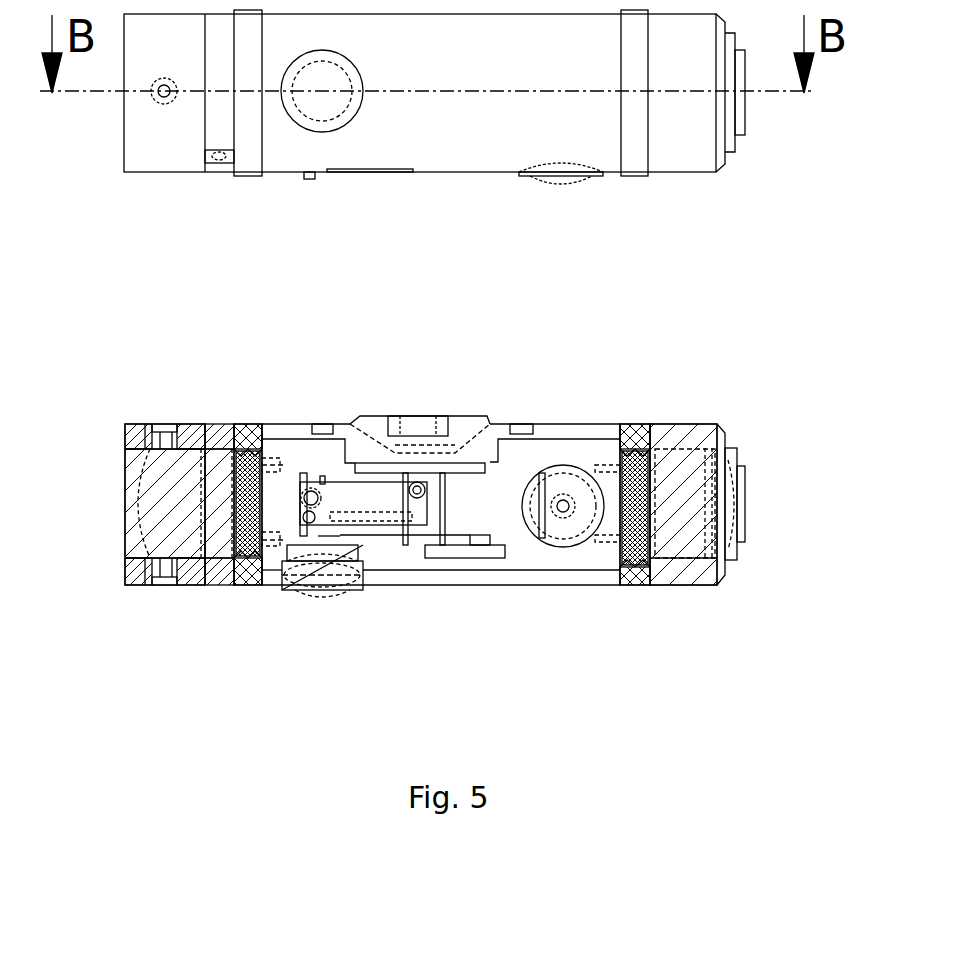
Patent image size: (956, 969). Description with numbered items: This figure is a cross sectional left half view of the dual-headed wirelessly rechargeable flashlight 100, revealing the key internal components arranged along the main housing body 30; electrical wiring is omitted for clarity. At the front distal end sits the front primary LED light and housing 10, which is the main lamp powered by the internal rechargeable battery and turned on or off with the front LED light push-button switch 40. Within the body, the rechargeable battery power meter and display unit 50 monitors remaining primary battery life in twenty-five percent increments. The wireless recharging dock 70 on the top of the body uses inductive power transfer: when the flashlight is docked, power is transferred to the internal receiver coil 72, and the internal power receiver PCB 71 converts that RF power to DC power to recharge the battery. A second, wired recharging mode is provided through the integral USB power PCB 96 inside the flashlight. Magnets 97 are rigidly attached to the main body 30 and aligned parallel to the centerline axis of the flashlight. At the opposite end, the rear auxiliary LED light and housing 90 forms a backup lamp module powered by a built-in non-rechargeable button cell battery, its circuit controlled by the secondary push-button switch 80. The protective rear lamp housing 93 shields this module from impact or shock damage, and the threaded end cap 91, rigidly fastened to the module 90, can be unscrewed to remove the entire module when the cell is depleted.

The dual-headed wirelessly rechargeable flashlight 100 is at (718, 392).
The front primary LED light and housing 10 is at (165, 503).
The main housing body 30 is at (375, 576).
The front LED light push-button switch 40 is at (322, 598).
The rechargeable battery power meter and display unit 50 is at (356, 501).
The wireless recharging dock 70 is at (418, 430).
The internal power receiver PCB 71 is at (505, 545).
The internal receiver coil 72 is at (372, 468).
The secondary (rear LED light) push-button switch 80 is at (563, 506).
The rear auxiliary LED light and housing 90 is at (684, 513).
The threaded end cap 91 is at (634, 430).
The protective rear lamp housing 93 is at (672, 573).
The integral USB power PCB 96 is at (543, 540).
The magnets 97 is at (322, 430).